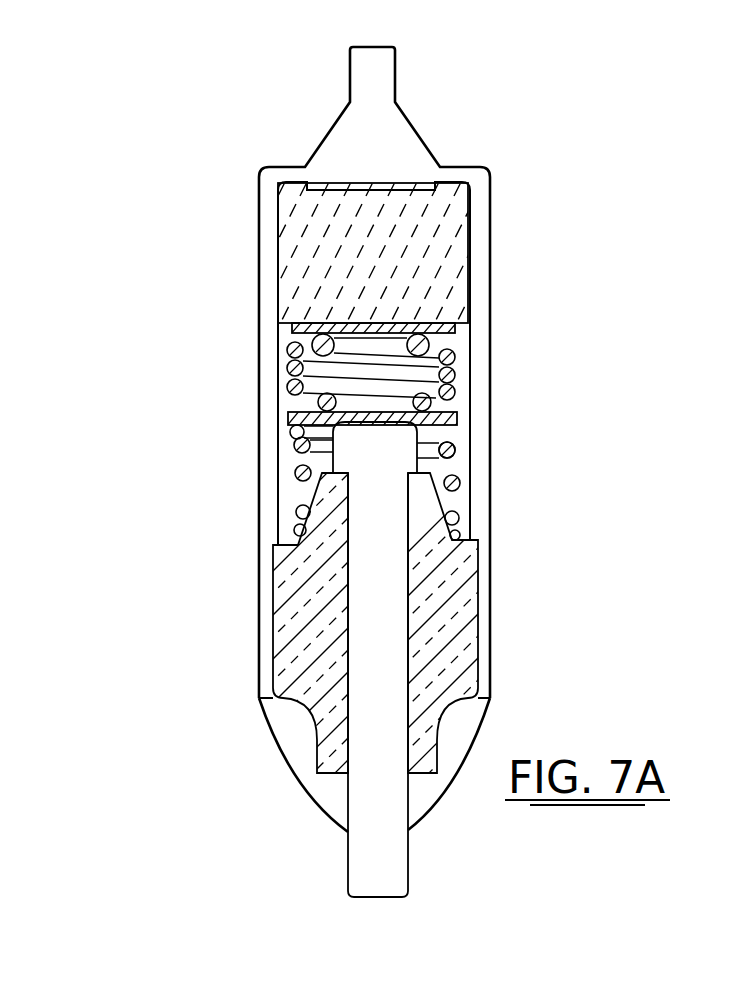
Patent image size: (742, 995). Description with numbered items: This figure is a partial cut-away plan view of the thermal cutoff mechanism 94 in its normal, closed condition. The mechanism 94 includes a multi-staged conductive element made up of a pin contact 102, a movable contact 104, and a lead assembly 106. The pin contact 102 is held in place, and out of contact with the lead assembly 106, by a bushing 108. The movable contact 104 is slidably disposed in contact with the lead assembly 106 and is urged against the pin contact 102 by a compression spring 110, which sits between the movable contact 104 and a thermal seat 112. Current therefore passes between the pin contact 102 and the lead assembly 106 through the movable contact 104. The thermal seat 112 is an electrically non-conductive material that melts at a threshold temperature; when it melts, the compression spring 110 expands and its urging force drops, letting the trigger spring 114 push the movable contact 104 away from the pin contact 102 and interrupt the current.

The thermal cutoff mechanism 94 is at (510, 268).
The pin contact 102 is at (393, 867).
The movable contact 104 is at (455, 412).
The lead assembly 106 is at (473, 168).
The bushing 108 is at (297, 600).
The compression spring 110 is at (332, 392).
The thermal seat 112 is at (312, 258).
The trigger spring 114 is at (453, 452).